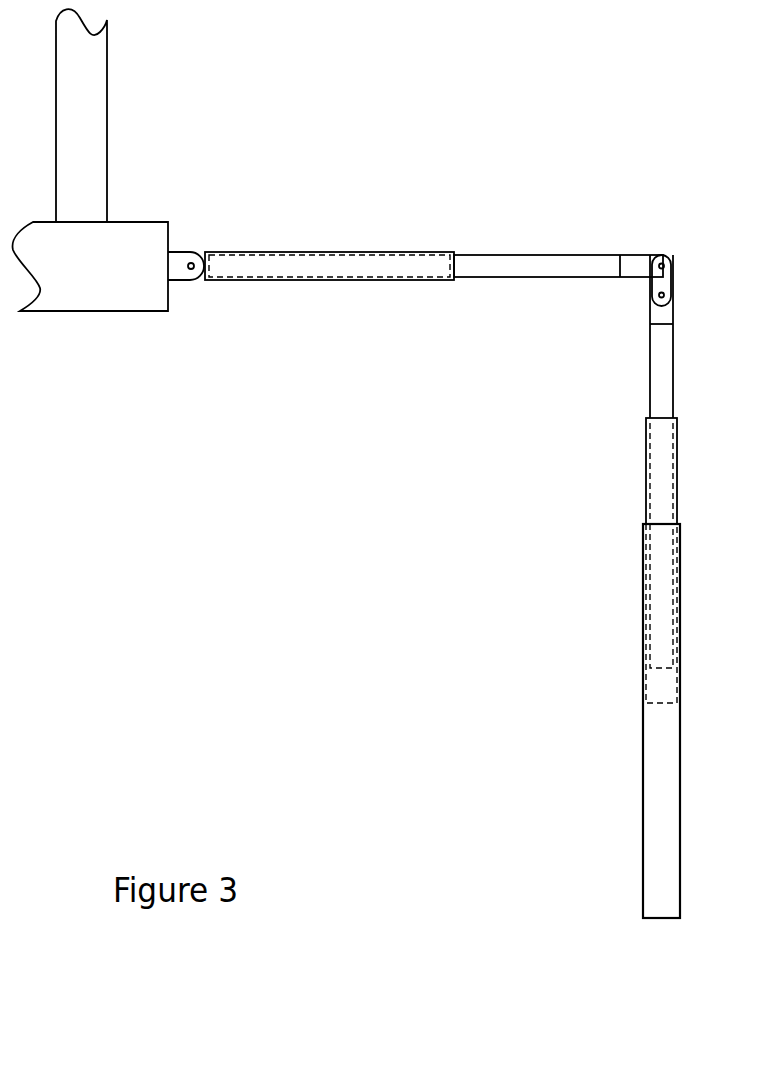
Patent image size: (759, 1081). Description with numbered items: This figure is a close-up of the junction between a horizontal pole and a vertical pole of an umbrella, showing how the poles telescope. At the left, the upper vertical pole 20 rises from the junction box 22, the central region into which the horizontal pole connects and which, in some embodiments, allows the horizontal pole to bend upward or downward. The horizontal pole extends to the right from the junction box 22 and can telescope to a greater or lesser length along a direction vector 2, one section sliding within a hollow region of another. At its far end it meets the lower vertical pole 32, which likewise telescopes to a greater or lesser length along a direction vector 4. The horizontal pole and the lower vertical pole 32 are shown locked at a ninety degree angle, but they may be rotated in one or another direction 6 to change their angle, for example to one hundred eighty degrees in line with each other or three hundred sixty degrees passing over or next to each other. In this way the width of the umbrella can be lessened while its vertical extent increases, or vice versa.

The upper vertical pole 20 is at (100, 148).
The junction box 22 is at (108, 288).
The direction vector 2 is at (546, 210).
The direction vector 4 is at (618, 473).
The rotation direction 6 is at (601, 236).
The lower vertical pole 32 is at (665, 363).